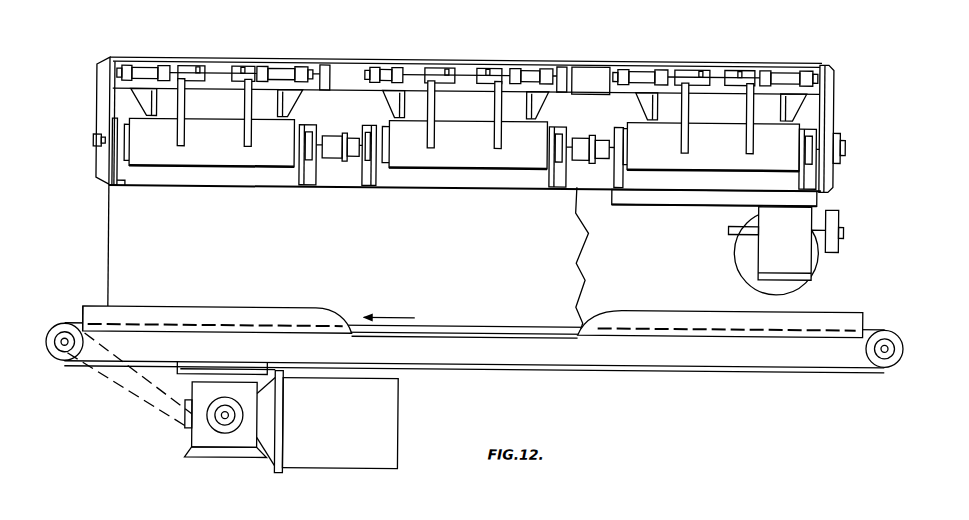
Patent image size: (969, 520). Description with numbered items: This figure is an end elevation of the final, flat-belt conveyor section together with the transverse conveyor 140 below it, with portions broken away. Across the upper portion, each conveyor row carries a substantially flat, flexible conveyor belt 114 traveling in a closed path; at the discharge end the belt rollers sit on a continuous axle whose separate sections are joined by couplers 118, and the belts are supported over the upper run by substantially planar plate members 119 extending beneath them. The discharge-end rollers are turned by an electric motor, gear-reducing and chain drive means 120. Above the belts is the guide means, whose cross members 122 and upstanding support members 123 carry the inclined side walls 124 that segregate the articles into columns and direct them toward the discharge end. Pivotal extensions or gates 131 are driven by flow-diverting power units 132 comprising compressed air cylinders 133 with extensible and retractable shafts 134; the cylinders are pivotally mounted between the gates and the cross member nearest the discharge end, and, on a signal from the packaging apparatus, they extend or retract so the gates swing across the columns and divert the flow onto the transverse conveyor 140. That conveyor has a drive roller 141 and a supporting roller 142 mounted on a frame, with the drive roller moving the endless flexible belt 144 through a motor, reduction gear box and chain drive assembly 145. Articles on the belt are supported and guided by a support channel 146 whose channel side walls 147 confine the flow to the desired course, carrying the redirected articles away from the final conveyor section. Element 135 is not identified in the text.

The conveyor belt 114 is at (478, 163).
The coupler 118 is at (343, 160).
The plate member 119 is at (397, 166).
The electric motor, gear-reducing and chain drive means 120 is at (823, 256).
The cross member 122 is at (588, 61).
The upstanding support member 123 is at (100, 60).
The inclined side wall 124 is at (140, 92).
The pivotal extension or gate 131 is at (247, 137).
The flow-diverting power unit 132 is at (469, 77).
The compressed air cylinder 133 is at (292, 68).
The extensible and retractable shaft 134 is at (182, 72).
The roller 135 is at (145, 67).
The transverse conveyor 140 is at (474, 340).
The drive roller 141 is at (66, 357).
The supporting roller 142 is at (887, 350).
The endless flexible belt 144 is at (464, 324).
The motor, reduction gear box and chain drive assembly 145 is at (370, 419).
The support channel 146 is at (85, 302).
The channel side wall 147 is at (182, 305).